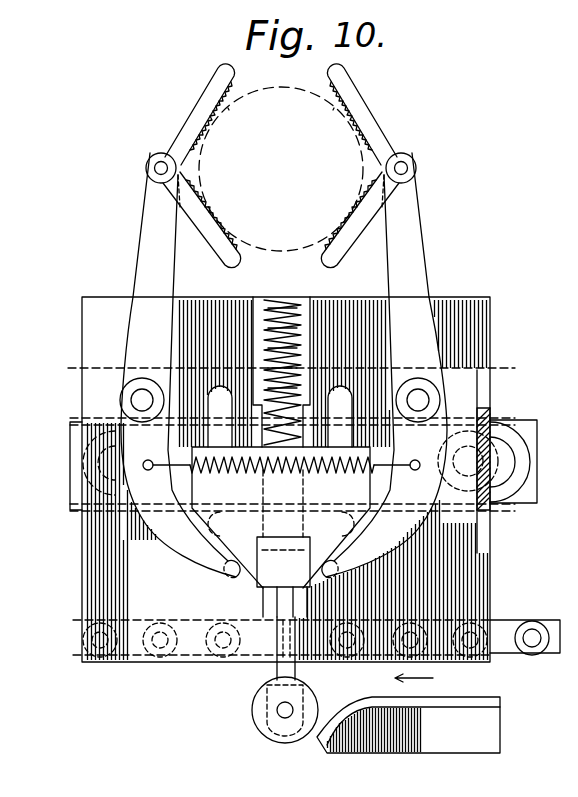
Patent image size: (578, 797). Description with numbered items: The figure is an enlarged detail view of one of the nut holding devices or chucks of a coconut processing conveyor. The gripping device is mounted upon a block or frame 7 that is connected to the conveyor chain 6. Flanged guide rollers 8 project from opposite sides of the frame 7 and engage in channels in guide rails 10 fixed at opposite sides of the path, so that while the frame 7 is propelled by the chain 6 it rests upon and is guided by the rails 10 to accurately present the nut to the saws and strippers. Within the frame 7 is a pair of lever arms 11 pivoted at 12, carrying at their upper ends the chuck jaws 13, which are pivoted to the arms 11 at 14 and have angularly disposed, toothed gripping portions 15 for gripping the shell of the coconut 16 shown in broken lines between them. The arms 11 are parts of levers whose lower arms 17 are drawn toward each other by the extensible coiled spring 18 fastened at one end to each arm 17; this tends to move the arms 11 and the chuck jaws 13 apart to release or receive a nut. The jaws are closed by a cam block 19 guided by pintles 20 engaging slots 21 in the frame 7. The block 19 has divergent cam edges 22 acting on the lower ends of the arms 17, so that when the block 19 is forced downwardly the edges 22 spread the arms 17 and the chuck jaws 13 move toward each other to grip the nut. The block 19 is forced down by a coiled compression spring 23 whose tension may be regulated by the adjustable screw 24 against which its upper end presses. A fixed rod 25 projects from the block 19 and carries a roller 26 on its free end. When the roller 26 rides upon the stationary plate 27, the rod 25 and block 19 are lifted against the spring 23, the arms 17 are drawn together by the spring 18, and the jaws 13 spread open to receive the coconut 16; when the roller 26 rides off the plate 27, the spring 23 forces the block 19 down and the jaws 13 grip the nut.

The conveyor chain 6 is at (543, 654).
The block or frame 7 is at (499, 589).
The flanged guide rollers 8 is at (508, 440).
The guide rails 10 is at (540, 415).
The lever arms 11 is at (512, 383).
The pivot 12 is at (142, 398).
The chuck jaws 13 is at (190, 121).
The jaw pivot 14 is at (157, 171).
The toothed gripping portions 15 is at (328, 112).
The coconut 16 is at (281, 169).
The lower arms 17 is at (283, 482).
The extensible coiled spring 18 is at (282, 481).
The cam block 19 is at (281, 517).
The pintles 20 is at (378, 518).
The slots 21 is at (220, 395).
The divergent cam edges 22 is at (256, 576).
The coiled compression spring 23 is at (268, 402).
The adjustable screw 24 is at (282, 303).
The fixed rod 25 is at (275, 673).
The roller 26 is at (260, 733).
The stationary plate 27 is at (502, 708).